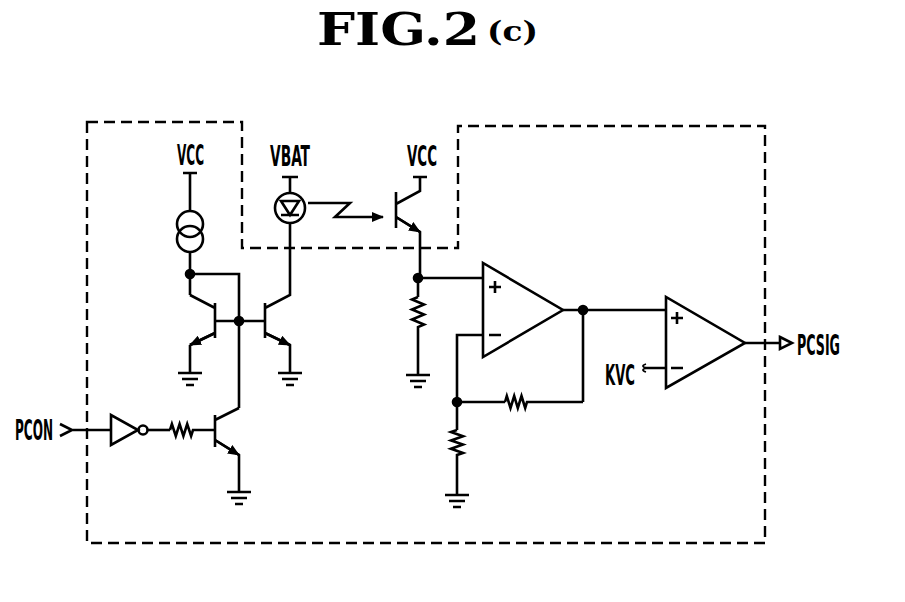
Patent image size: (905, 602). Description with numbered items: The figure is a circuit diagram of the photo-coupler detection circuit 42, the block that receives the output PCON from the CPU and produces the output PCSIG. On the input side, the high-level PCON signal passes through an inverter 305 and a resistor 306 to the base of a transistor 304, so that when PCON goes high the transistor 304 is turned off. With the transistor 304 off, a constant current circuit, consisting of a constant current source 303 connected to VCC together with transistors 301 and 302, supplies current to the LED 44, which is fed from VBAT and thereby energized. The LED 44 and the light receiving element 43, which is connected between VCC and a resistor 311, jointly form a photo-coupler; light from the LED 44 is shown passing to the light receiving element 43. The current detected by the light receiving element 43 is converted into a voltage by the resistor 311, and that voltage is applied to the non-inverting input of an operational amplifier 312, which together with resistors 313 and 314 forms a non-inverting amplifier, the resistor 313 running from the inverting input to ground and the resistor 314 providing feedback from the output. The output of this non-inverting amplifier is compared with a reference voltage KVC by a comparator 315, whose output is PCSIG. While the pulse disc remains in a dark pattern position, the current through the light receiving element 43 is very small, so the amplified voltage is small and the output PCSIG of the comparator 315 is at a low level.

The photo-coupler detection circuit 42 is at (768, 153).
The light receiving element 43 is at (408, 192).
The LED 44 is at (305, 200).
The transistor 301 is at (200, 320).
The transistor 302 is at (280, 323).
The constant current source 303 is at (178, 228).
The transistor 304 is at (228, 432).
The inverter 305 is at (125, 447).
The resistor 306 is at (183, 445).
The resistor 311 is at (410, 315).
The operational amplifier 312 is at (523, 280).
The resistor 313 is at (447, 440).
The resistor 314 is at (515, 410).
The comparator 315 is at (700, 313).